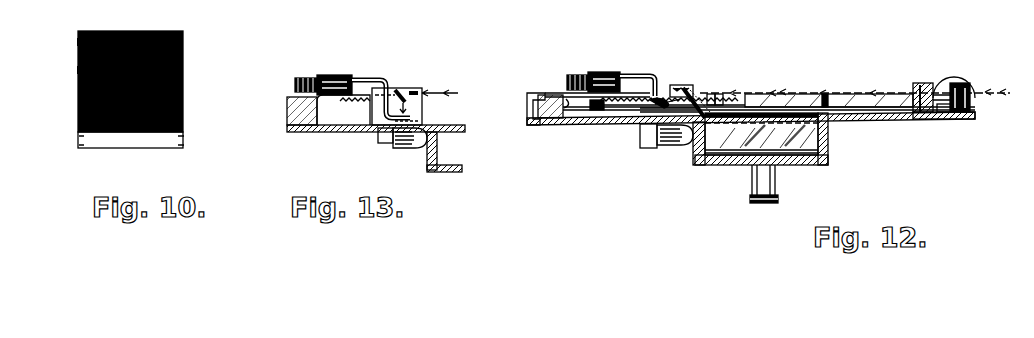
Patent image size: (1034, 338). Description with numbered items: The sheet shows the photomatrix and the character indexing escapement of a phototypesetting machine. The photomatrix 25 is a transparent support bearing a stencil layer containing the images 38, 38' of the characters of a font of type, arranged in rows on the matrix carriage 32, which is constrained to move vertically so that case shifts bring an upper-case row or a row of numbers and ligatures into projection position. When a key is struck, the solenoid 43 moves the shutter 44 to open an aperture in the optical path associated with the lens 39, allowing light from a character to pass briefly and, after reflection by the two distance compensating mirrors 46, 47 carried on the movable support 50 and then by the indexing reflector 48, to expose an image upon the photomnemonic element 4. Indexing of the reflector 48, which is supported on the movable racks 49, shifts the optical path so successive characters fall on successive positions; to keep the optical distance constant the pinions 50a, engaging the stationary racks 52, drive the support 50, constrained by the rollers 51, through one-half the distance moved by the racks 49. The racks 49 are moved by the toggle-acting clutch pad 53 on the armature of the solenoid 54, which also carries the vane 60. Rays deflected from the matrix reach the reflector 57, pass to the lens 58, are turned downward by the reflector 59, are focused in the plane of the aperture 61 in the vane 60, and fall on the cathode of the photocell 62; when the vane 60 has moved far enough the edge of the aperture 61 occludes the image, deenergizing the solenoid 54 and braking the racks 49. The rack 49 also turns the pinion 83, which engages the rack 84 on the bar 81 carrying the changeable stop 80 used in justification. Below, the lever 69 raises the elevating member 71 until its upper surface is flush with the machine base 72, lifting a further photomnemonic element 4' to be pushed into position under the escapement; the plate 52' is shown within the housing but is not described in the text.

In FIG. 10, the photomatrix 25 is at (176, 31).
In FIG. 10, the character image 38 is at (64, 38).
In FIG. 10, the character image 38' is at (64, 65).
In FIG. 10, the matrix carriage 32 is at (183, 141).
In FIG. 13, the movable racks 49 is at (345, 103).
In FIG. 12, the movable racks 49 is at (553, 95).
In FIG. 13, the vane 60 is at (372, 112).
In FIG. 13, the solenoid 54 is at (333, 75).
In FIG. 12, the solenoid 54 is at (603, 72).
In FIG. 13, the toggle-acting clutch pad 53 is at (362, 82).
In FIG. 12, the toggle-acting clutch pad 53 is at (630, 74).
In FIG. 13, the reflector 59 is at (408, 90).
In FIG. 13, the aperture 61 is at (421, 108).
In FIG. 13, the photocell 62 is at (410, 149).
In FIG. 12, the photocell 62 is at (683, 146).
In FIG. 12, the pinion 83 is at (570, 108).
In FIG. 12, the rack 84 is at (598, 110).
In FIG. 12, the indexing reflector 48 is at (728, 102).
In FIG. 12, the pinions 50a is at (650, 108).
In FIG. 12, the stationary racks 52 is at (656, 125).
In FIG. 12, the rollers 51 is at (684, 85).
In FIG. 12, the movable support 50 is at (692, 90).
In FIG. 12, the distance compensating mirror 46 is at (711, 94).
In FIG. 12, the distance compensating mirror 47 is at (719, 94).
In FIG. 12, the reflector 57 is at (972, 99).
In FIG. 12, the photomnemonic element 4 is at (765, 139).
In FIG. 12, the photomnemonic element 4' is at (773, 146).
In FIG. 12, the elevating member 71 is at (788, 166).
In FIG. 12, the glass plate 52' is at (761, 135).
In FIG. 12, the lever 69 is at (762, 204).
In FIG. 12, the bar 81 is at (790, 106).
In FIG. 12, the machine base 72 is at (905, 120).
In FIG. 12, the changeable stop 80 is at (936, 112).
In FIG. 12, the lens 39 is at (918, 95).
In FIG. 12, the lens 58 is at (921, 83).
In FIG. 12, the solenoid 43 is at (954, 77).
In FIG. 12, the shutter 44 is at (958, 84).